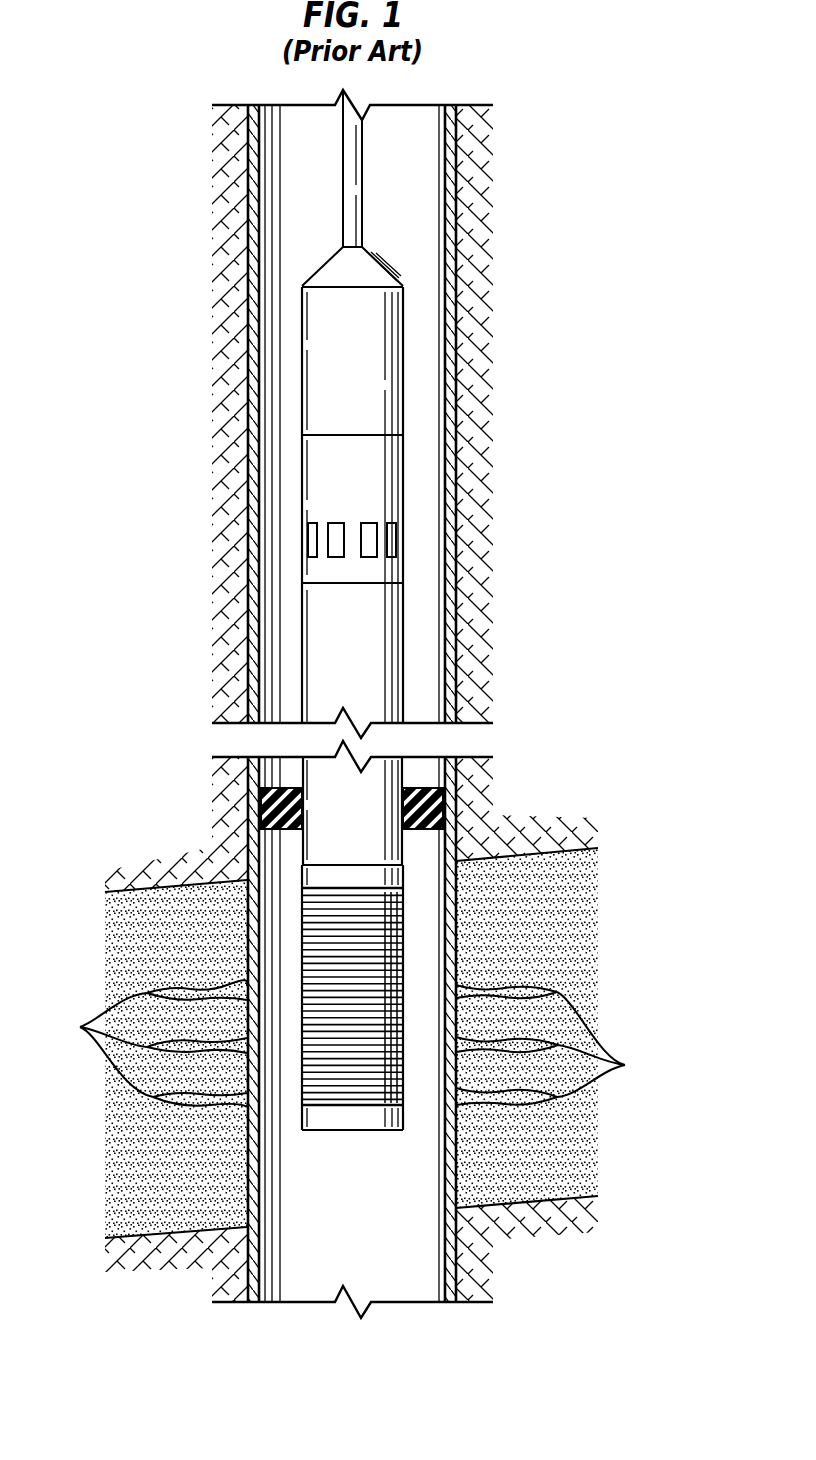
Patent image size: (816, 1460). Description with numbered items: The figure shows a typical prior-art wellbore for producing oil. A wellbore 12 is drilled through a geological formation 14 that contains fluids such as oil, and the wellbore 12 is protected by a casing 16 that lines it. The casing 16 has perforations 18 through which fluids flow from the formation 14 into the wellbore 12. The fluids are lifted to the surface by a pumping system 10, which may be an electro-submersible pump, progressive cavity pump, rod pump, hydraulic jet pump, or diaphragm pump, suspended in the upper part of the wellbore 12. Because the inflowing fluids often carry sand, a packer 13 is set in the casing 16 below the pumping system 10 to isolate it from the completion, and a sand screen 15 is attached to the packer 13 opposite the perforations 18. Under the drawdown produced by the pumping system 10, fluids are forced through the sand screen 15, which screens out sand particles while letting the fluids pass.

The pumping system 10 is at (417, 338).
The wellbore 12 is at (424, 488).
The packer 13 is at (262, 805).
The geological formation 14 is at (552, 927).
The sand screen 15 is at (369, 1009).
The casing 16 is at (248, 200).
The perforations 18 is at (80, 1027).